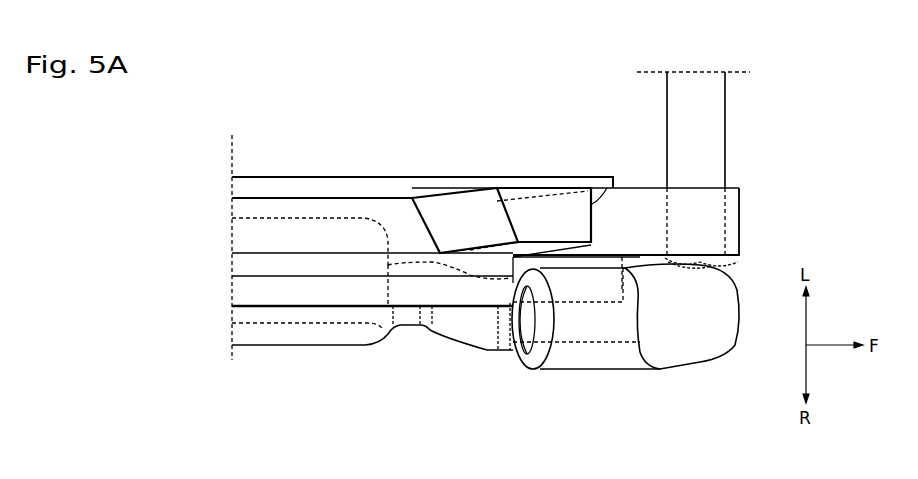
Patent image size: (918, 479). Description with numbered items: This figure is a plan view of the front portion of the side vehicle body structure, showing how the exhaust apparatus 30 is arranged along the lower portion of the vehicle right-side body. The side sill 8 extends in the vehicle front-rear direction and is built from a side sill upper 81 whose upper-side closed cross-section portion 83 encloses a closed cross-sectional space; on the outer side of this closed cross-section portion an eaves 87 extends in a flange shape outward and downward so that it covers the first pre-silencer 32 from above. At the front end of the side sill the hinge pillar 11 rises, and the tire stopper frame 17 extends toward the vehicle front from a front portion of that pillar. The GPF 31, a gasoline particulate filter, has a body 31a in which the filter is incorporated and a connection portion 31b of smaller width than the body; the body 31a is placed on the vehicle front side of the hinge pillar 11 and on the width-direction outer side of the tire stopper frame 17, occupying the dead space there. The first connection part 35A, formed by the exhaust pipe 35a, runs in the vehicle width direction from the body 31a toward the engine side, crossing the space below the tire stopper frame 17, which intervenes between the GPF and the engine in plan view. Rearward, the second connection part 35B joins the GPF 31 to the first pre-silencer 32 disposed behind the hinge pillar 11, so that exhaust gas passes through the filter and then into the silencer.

The side sill 8 is at (315, 176).
The side sill upper 81 is at (258, 197).
The closed cross-section portion 83 is at (262, 238).
The eaves 87 is at (322, 308).
The first pre-silencer 32 is at (253, 348).
The exhaust pipe 35a is at (403, 328).
The first connection part 35A is at (728, 157).
The second connection part 35B is at (493, 430).
The connection portion 31b is at (479, 352).
The body 31a is at (618, 372).
The GPF 31 is at (713, 361).
The exhaust apparatus 30 is at (562, 384).
The hinge pillar 11 is at (607, 180).
The tire stopper frame 17 is at (740, 215).